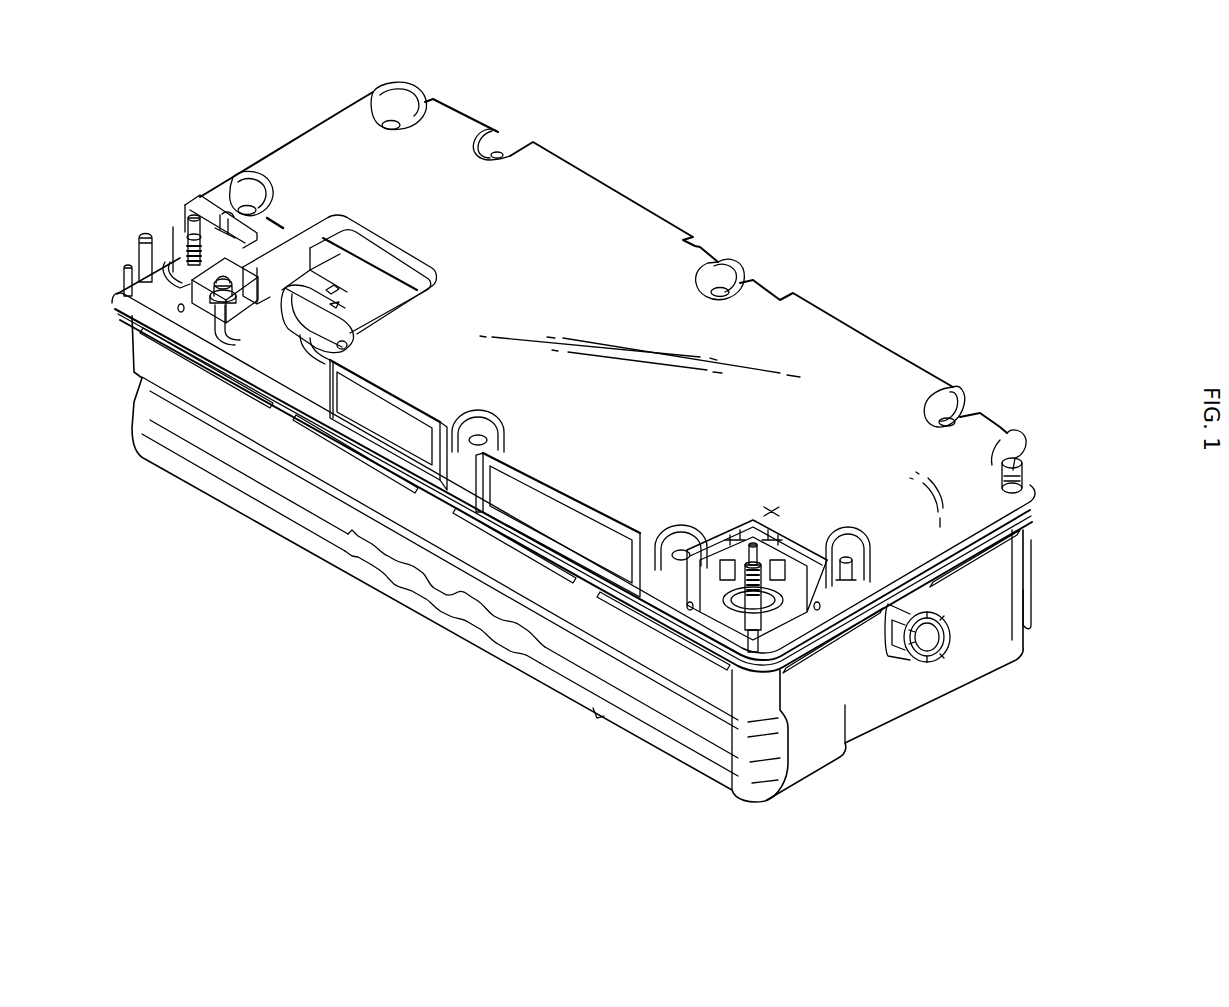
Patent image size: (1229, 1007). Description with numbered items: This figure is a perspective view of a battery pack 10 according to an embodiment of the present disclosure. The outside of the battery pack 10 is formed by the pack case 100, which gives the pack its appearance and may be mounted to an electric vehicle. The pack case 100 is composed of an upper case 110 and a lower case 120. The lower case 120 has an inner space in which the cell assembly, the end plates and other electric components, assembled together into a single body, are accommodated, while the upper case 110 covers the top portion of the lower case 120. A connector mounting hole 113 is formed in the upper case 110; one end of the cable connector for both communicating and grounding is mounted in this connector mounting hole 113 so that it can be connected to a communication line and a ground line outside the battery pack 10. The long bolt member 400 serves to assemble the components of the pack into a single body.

The battery pack 10 is at (847, 109).
The pack case 100 is at (1102, 447).
The upper case 110 is at (972, 450).
The lower case 120 is at (1003, 569).
The connector mounting hole 113 is at (312, 315).
The long bolt member 400 is at (375, 91).